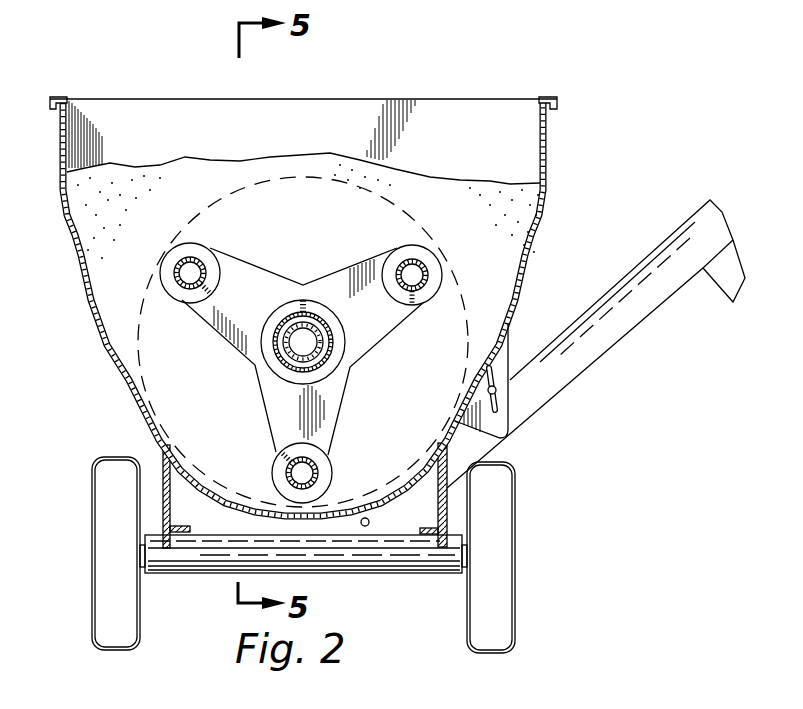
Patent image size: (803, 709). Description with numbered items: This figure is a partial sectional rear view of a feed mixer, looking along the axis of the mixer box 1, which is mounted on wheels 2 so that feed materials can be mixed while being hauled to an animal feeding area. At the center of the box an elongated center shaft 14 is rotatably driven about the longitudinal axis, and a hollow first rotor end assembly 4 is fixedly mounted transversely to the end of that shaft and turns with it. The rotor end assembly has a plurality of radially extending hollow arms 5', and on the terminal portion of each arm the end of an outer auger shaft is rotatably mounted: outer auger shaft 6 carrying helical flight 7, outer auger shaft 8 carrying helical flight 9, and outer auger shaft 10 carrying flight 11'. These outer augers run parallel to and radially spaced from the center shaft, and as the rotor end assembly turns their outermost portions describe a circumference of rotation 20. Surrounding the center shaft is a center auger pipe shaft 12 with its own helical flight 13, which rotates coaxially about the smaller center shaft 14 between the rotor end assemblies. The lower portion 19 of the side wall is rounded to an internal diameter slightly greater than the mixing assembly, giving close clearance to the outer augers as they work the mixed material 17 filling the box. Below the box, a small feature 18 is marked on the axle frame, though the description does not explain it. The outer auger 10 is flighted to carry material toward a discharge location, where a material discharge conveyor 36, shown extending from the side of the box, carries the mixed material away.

The mixer box 1 is at (548, 134).
The wheels 2 is at (513, 515).
The first rotor end assembly 4 is at (300, 334).
The hollow arms 5' is at (308, 334).
The outer auger shaft 6 is at (430, 275).
The helical flight 7 is at (420, 256).
The outer auger shaft 8 is at (173, 270).
The helical flight 9 is at (188, 252).
The outer auger shaft 10 is at (322, 480).
The helical flight 11' is at (336, 454).
The center auger pipe shaft 12 is at (283, 320).
The helical flight 13 is at (318, 310).
The center shaft 14 is at (325, 348).
The mixed material 17 is at (540, 209).
The frame hole 18 is at (367, 526).
The lower portion of side wall 19 is at (483, 450).
The circumference of rotation 20 is at (285, 173).
The material discharge conveyor 36 is at (582, 367).